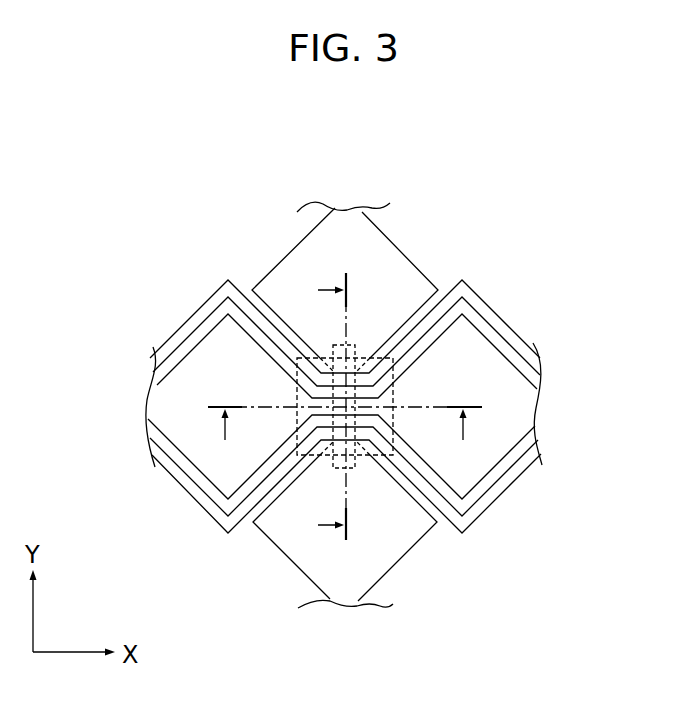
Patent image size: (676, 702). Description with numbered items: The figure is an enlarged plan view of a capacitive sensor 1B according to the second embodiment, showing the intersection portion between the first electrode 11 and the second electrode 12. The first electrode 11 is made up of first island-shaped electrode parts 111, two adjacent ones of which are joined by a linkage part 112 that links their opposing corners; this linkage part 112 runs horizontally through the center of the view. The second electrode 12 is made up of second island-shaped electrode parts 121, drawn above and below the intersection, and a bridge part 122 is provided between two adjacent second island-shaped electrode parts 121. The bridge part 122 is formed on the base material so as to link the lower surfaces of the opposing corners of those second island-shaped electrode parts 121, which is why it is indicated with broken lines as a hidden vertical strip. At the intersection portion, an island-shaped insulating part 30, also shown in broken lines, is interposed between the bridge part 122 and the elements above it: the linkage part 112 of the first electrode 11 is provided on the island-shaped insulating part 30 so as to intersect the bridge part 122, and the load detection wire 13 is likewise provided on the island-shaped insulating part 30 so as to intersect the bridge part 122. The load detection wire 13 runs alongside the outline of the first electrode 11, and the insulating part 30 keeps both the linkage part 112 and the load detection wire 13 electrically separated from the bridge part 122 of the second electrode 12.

The capacitive sensor 1B is at (519, 142).
The first electrode 11 is at (363, 387).
The first island-shaped electrode part 111 is at (186, 363).
The linkage part 112 is at (470, 527).
The second electrode 12 is at (418, 395).
The second island-shaped electrode part 121 is at (408, 292).
The bridge part 122 is at (356, 345).
The load detection wire 13 is at (228, 280).
The island-shaped insulating part 30 is at (297, 417).